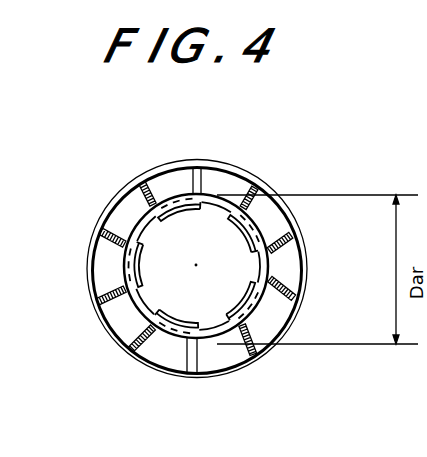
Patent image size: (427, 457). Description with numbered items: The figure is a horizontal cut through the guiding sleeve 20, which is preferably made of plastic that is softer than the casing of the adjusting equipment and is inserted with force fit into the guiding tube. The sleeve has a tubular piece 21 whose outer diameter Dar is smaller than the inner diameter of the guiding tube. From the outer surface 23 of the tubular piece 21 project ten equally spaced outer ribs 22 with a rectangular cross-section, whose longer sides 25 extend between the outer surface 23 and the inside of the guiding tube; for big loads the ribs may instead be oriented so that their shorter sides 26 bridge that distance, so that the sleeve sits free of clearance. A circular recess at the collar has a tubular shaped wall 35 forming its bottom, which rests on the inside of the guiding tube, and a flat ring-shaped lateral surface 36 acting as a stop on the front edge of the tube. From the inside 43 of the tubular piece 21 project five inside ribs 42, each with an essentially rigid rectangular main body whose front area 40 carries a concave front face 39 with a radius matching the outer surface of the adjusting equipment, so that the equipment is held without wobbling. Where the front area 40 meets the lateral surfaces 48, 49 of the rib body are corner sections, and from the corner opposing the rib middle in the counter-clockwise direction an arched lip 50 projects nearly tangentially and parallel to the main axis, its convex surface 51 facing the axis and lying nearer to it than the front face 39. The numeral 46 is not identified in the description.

The guiding sleeve 20 is at (200, 265).
The tubular piece 21 is at (143, 328).
The outer ribs 22 is at (150, 302).
The outer surface 23 is at (198, 167).
The longer sides 25 is at (149, 183).
The shorter sides 26 is at (142, 185).
The tubular shaped wall 35 is at (274, 227).
The lateral surface 36 is at (251, 176).
The front face 39 is at (152, 346).
The front area 40 is at (140, 255).
The inside ribs 42 is at (268, 256).
The inside 43 is at (212, 352).
The hatched wall section 46 is at (112, 262).
The lateral surface 48 is at (272, 345).
The lateral surface 49 is at (284, 310).
The lip 50 is at (168, 362).
The convex surface 51 is at (268, 276).